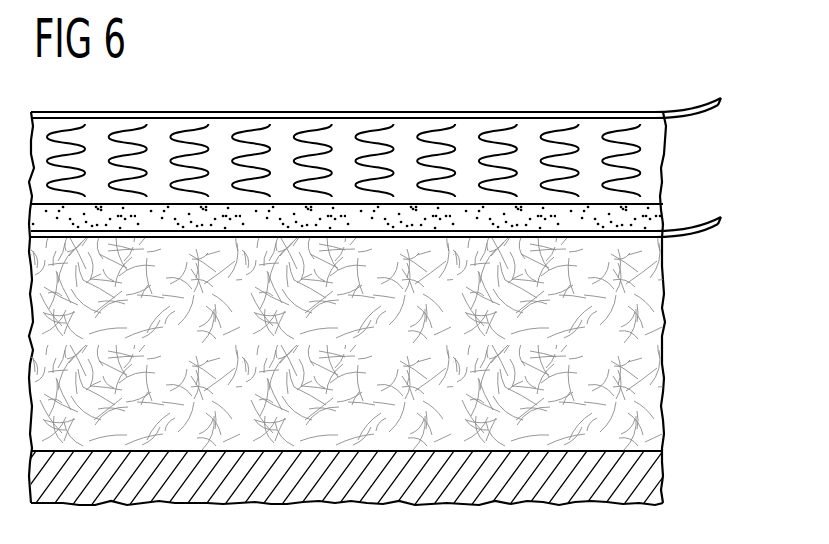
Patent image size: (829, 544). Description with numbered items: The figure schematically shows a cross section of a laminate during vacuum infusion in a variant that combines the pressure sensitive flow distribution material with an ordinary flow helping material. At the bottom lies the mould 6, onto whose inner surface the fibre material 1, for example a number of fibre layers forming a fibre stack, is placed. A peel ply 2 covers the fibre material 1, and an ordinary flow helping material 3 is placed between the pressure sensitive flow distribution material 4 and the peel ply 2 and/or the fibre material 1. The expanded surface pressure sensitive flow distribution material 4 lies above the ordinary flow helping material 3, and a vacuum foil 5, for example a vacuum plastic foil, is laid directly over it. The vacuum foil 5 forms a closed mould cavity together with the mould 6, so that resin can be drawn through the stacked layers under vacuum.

The fibre material 1 is at (653, 336).
The peel ply 2 is at (713, 228).
The ordinary flow helping material 3 is at (653, 220).
The pressure sensitive flow distribution material 4 is at (655, 157).
The vacuum foil 5 is at (713, 109).
The mould 6 is at (655, 495).